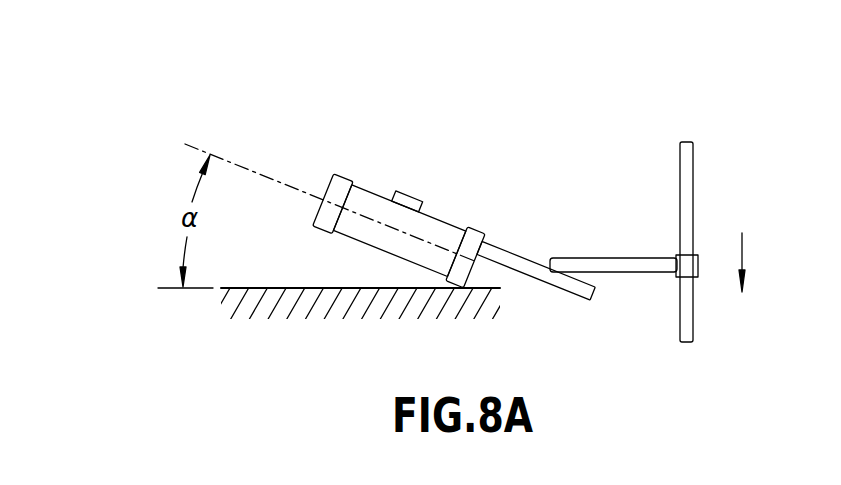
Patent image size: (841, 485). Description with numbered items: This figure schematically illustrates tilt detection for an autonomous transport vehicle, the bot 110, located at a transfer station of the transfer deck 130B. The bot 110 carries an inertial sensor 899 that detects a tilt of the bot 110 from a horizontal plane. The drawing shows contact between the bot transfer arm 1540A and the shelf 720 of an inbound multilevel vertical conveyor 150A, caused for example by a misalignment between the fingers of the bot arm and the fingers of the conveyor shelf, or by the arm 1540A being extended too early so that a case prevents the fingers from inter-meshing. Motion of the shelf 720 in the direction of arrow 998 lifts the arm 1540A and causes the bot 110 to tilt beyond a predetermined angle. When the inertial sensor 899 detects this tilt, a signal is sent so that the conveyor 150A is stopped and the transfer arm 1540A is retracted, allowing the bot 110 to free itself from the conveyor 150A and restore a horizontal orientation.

The bot 110 is at (343, 172).
The inertial sensor 899 is at (410, 190).
The bot transfer arm 1540A is at (543, 278).
The shelf 720 is at (612, 257).
The inbound multilevel vertical conveyor 150A is at (735, 149).
The arrow 998 is at (745, 253).
The transfer deck 130B is at (223, 290).